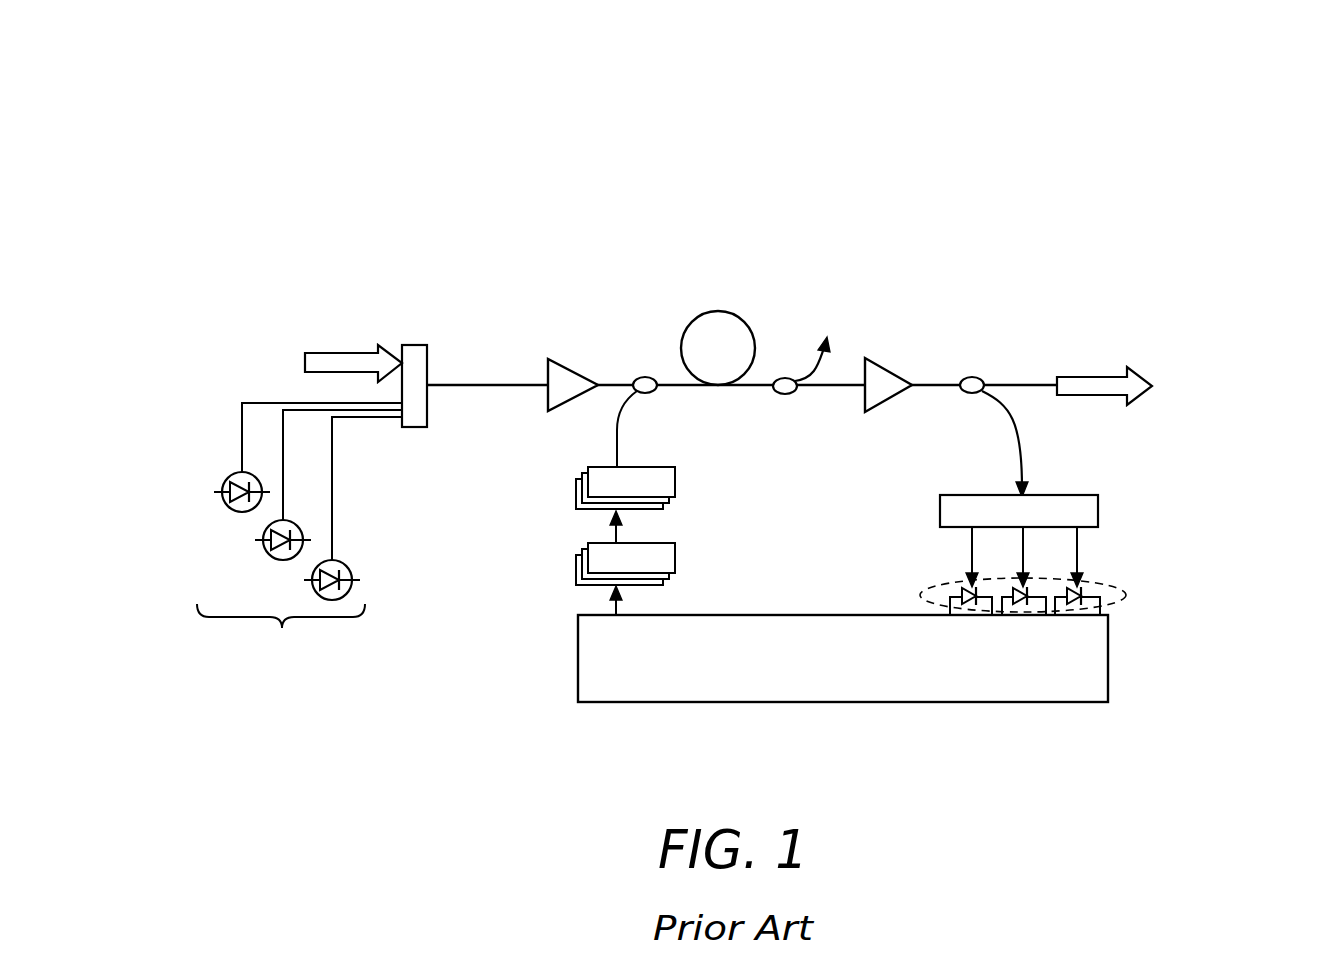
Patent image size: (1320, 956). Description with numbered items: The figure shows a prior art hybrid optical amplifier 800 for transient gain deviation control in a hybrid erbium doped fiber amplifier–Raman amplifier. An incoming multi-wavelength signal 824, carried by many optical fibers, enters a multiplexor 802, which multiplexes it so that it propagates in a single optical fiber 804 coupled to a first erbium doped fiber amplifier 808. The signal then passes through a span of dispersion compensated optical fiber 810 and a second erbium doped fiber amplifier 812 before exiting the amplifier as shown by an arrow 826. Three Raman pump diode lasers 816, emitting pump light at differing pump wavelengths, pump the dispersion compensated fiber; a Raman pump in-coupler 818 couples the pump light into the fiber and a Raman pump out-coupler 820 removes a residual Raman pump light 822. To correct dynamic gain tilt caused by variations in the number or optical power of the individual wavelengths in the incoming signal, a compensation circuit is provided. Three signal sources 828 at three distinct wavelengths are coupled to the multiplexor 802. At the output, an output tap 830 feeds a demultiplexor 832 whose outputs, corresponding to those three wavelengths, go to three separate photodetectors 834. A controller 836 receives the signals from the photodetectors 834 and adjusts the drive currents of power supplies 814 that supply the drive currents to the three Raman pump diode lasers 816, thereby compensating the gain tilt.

The hybrid optical amplifier 800 is at (992, 86).
The multiplexor 802 is at (410, 345).
The single optical fiber 804 is at (490, 384).
The first erbium doped fiber amplifier 808 is at (568, 365).
The span of dispersion compensated optical fiber 810 is at (718, 311).
The second erbium doped fiber amplifier 812 is at (890, 370).
The power supplies 814 is at (576, 571).
The Raman pump diode lasers 816 is at (576, 496).
The Raman pump in-coupler 818 is at (645, 377).
The Raman pump out-coupler 820 is at (787, 394).
The residual Raman pump light 822 is at (821, 344).
The incoming multi-wavelength signal 824 is at (305, 363).
The arrow 826 is at (1152, 386).
The signal sources 828 is at (299, 534).
The output tap 830 is at (975, 377).
The demultiplexor 832 is at (1098, 512).
The photodetectors 834 is at (1127, 595).
The controller 836 is at (843, 658).